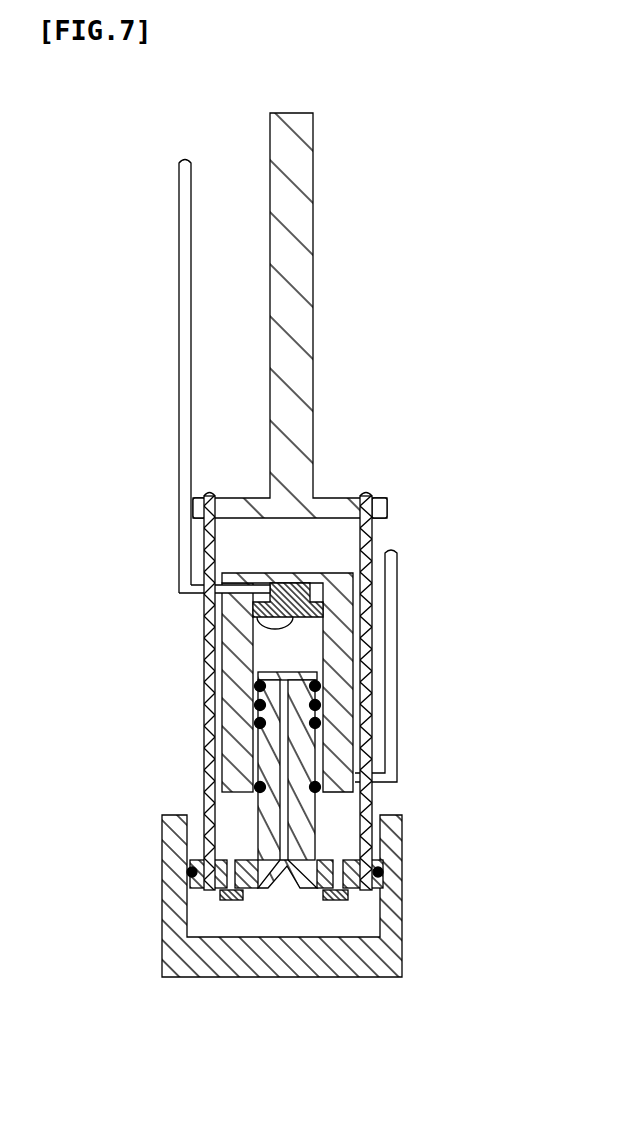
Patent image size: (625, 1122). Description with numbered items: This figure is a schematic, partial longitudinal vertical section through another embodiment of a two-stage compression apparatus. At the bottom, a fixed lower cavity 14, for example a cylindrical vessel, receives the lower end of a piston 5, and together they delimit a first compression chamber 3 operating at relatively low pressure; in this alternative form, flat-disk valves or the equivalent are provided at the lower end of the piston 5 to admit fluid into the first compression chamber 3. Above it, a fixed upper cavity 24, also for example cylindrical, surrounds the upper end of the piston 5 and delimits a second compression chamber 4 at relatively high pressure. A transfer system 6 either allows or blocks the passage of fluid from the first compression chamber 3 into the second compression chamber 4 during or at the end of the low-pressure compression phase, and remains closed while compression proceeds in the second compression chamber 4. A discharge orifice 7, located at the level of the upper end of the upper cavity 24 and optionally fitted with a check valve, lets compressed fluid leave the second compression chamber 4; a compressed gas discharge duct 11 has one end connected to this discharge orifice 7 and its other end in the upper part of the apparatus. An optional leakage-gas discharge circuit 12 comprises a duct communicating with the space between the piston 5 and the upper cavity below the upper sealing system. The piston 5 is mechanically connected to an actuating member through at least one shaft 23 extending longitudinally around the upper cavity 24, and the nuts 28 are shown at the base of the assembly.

The first compression chamber 3 is at (200, 912).
The second compression chamber 4 is at (305, 648).
The piston 5 is at (268, 821).
The transfer system 6 is at (255, 647).
The discharge orifice 7 is at (255, 609).
The compressed gas discharge duct 11 is at (185, 268).
The leakage-gas discharge circuit 12 is at (397, 607).
The lower cavity 14 is at (187, 957).
The shaft 23 is at (366, 805).
The upper cavity 24 is at (233, 708).
The nut 28 is at (335, 903).